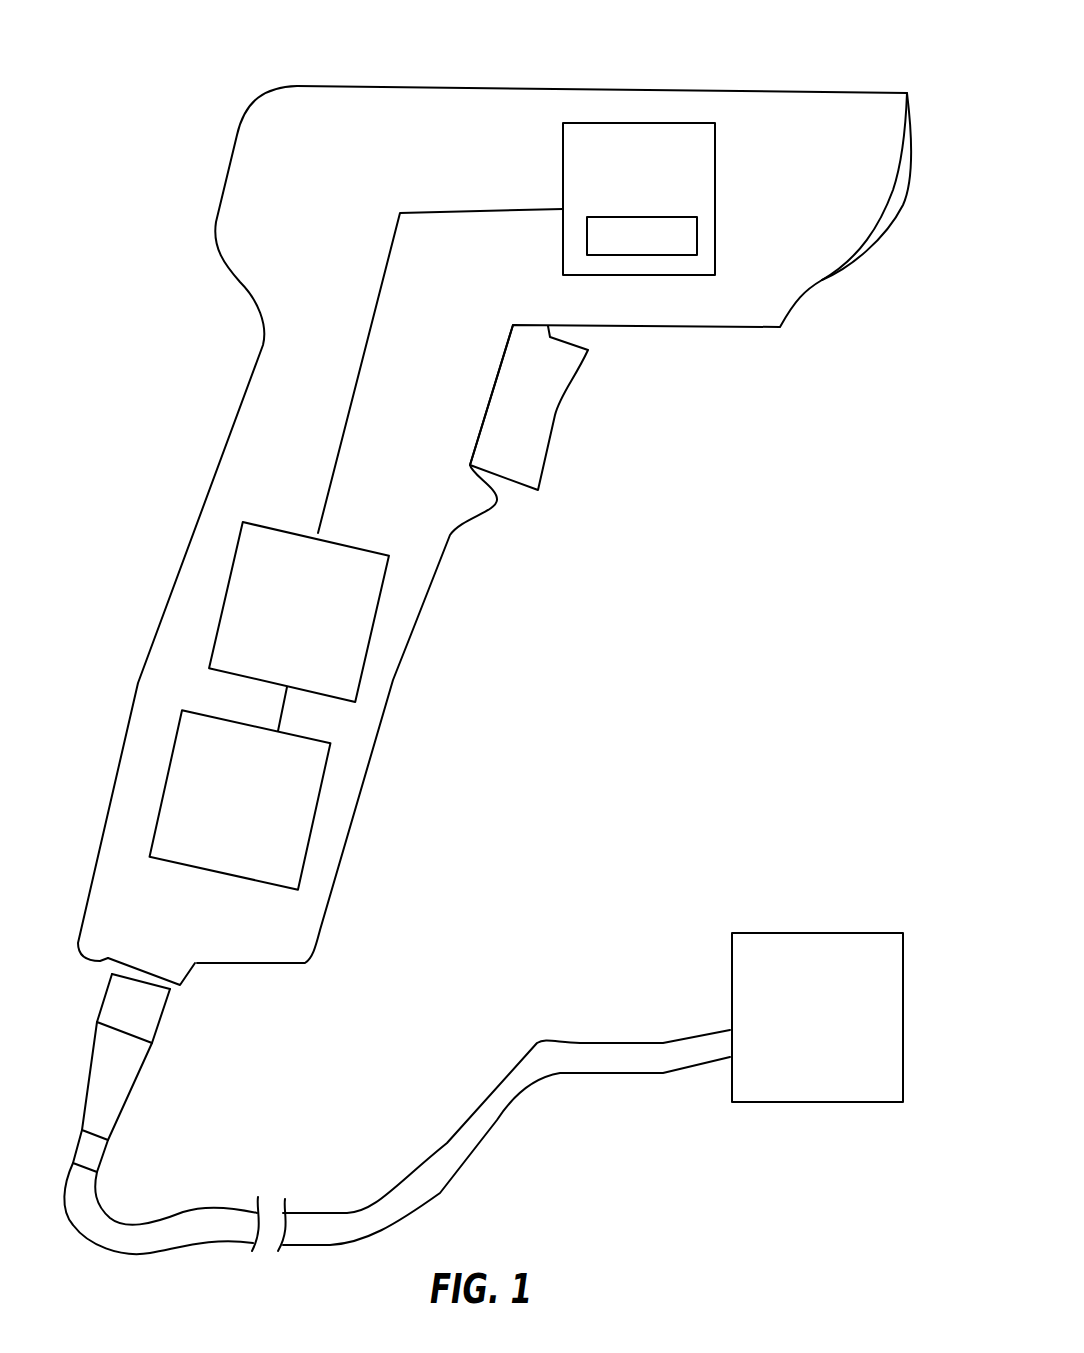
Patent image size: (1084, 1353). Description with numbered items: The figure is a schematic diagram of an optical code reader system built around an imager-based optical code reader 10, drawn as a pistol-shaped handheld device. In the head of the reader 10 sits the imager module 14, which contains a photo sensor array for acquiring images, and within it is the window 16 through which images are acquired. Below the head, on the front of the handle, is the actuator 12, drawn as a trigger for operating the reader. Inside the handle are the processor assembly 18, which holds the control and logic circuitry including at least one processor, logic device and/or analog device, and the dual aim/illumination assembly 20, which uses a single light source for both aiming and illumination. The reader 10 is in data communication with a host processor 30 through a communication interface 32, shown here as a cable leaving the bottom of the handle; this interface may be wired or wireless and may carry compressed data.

The optical code reader 10 is at (605, 88).
The actuator 12 is at (557, 407).
The imager module 14 is at (667, 135).
The window 16 is at (675, 230).
The processor assembly 18 is at (370, 635).
The dual aim/illumination assembly 20 is at (313, 830).
The host processor 30 is at (818, 933).
The communication interface 32 is at (333, 1212).